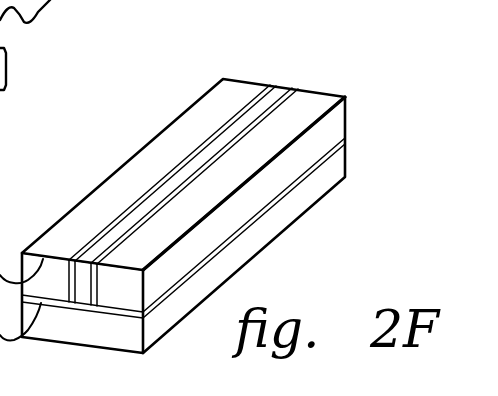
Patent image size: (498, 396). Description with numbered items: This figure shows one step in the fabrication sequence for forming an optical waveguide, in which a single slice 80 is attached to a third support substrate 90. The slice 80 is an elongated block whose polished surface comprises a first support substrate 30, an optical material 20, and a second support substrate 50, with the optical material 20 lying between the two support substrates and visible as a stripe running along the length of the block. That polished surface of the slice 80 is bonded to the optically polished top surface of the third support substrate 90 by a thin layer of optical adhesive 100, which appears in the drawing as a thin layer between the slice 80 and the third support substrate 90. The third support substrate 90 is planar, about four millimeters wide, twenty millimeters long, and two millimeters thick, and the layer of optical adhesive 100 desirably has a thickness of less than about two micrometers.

The optical material 20 is at (185, 168).
The first support substrate 30 is at (280, 130).
The second support substrate 50 is at (212, 103).
The slice 80 is at (325, 89).
The third support substrate 90 is at (163, 322).
The layer of optical adhesive 100 is at (250, 218).